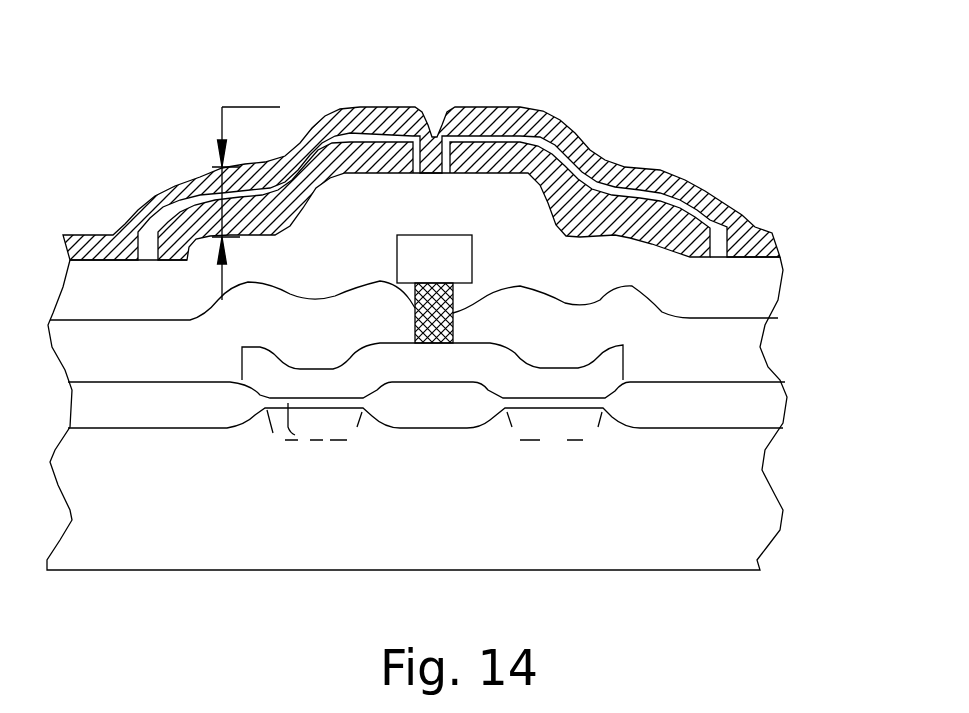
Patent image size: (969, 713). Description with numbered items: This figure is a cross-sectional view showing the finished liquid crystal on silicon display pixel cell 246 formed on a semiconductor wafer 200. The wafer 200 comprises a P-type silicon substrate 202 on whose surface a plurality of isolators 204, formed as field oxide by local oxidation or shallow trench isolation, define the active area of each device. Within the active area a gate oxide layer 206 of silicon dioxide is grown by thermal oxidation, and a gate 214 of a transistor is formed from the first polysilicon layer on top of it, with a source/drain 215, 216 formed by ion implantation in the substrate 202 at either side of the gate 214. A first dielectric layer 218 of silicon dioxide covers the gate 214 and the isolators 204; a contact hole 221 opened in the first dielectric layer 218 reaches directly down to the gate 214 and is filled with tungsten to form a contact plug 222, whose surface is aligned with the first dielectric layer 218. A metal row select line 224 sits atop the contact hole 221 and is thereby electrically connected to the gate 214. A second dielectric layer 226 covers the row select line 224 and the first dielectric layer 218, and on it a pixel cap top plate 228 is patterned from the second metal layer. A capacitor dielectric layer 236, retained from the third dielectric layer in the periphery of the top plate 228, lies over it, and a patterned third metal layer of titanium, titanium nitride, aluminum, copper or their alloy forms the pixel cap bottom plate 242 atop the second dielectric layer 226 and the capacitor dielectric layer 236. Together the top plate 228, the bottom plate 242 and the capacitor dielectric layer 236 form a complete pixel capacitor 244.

The semiconductor wafer 200 is at (825, 461).
The P-type silicon substrate 202 is at (463, 528).
The isolator 204 is at (187, 422).
The gate oxide layer 206 is at (287, 440).
The gate 214 is at (603, 367).
The source/drain 215 is at (318, 427).
The source/drain 216 is at (553, 428).
The first dielectric layer 218 is at (297, 340).
The contact hole 221 is at (475, 309).
The contact plug 222 is at (415, 312).
The row select line 224 is at (458, 277).
The second dielectric layer 226 is at (717, 298).
The pixel cap top plate 228 is at (186, 240).
The capacitor dielectric layer 236 is at (183, 213).
The pixel cap bottom plate 242 is at (767, 243).
The pixel capacitor 244 is at (246, 188).
The liquid crystal on silicon (LCOS) display pixel cell 246 is at (402, 52).